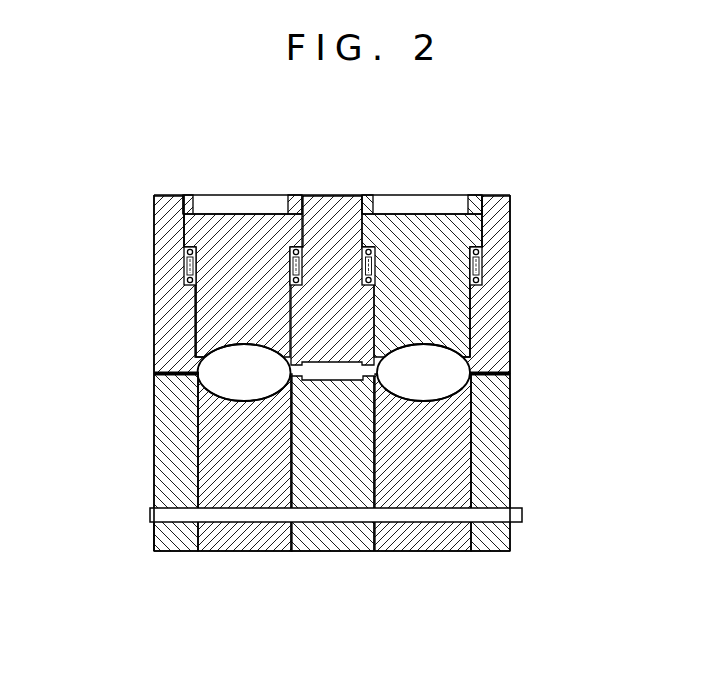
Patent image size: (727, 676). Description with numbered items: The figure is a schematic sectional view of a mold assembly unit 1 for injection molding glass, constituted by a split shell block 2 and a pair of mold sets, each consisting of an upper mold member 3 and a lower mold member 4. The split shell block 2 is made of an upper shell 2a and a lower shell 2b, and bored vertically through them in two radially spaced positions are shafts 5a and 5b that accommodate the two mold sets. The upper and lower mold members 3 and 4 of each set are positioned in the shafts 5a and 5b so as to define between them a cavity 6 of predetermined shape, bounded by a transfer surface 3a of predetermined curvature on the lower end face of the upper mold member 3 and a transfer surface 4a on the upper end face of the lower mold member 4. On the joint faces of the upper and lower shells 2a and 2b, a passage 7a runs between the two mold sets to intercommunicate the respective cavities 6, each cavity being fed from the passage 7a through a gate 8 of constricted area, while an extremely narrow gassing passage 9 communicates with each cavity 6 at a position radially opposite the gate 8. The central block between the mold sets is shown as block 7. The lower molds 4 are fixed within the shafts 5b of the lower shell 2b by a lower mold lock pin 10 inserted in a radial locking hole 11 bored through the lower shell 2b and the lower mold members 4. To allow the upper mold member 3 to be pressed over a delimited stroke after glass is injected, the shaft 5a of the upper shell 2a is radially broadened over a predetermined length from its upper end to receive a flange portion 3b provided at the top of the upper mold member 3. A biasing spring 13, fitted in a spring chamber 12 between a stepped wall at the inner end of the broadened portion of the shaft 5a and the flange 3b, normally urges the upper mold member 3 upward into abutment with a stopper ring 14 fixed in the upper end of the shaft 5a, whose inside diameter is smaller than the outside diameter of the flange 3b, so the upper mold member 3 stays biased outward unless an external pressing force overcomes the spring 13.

The mold assembly unit 1 is at (536, 185).
The split shell block 2 is at (524, 376).
The upper shell 2a is at (158, 295).
The lower shell 2b is at (497, 429).
The upper mold member 3 is at (227, 228).
The transfer surface 3a is at (251, 344).
The flange portion 3b is at (183, 222).
The lower mold member 4 is at (250, 497).
The transfer surface 4a is at (240, 401).
The shaft 5a is at (202, 315).
The shaft 5b is at (205, 488).
The cavity 6 is at (222, 367).
The center block 7 is at (332, 280).
The passage 7a is at (333, 380).
The gate 8 is at (283, 383).
The gassing passage 9 is at (172, 374).
The lower mold lock pin 10 is at (520, 516).
The radial locking hole 11 is at (168, 521).
The spring chamber 12 is at (185, 252).
The biasing spring 13 is at (185, 272).
The stopper ring 14 is at (187, 200).